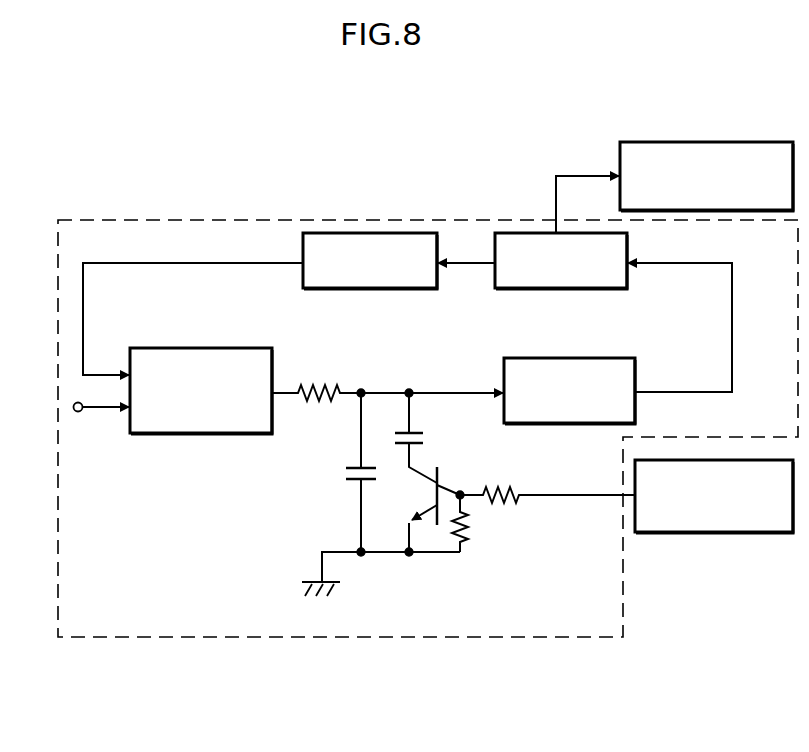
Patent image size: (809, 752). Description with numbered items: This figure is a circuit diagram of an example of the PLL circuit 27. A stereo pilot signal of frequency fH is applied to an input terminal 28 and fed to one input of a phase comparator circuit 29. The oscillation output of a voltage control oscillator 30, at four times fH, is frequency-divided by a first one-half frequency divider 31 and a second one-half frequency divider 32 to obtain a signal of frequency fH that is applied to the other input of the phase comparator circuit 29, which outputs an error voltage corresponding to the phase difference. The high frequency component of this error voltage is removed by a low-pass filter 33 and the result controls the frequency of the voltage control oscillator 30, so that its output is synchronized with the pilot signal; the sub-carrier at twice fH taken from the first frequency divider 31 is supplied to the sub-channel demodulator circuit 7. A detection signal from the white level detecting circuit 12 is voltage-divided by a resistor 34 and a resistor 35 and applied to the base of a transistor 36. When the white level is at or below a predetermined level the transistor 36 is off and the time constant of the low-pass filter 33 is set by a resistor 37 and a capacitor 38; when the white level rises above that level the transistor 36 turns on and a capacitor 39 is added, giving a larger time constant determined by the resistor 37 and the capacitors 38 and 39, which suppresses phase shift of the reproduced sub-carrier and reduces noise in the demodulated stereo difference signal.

The sub-channel demodulator circuit 7 is at (721, 142).
The white level detecting circuit 12 is at (698, 533).
The PLL circuit 27 is at (154, 220).
The input terminal 28 is at (79, 412).
The phase comparator circuit 29 is at (211, 434).
The voltage control oscillator 30 is at (636, 410).
The first 1/2 frequency divider 31 is at (625, 290).
The second 1/2 frequency divider 32 is at (423, 289).
The low-pass filter 33 is at (336, 449).
The resistor 34 is at (515, 490).
The resistor 35 is at (470, 532).
The transistor 36 is at (440, 480).
The resistor 37 is at (318, 386).
The capacitor 38 is at (346, 470).
The capacitor 39 is at (420, 430).